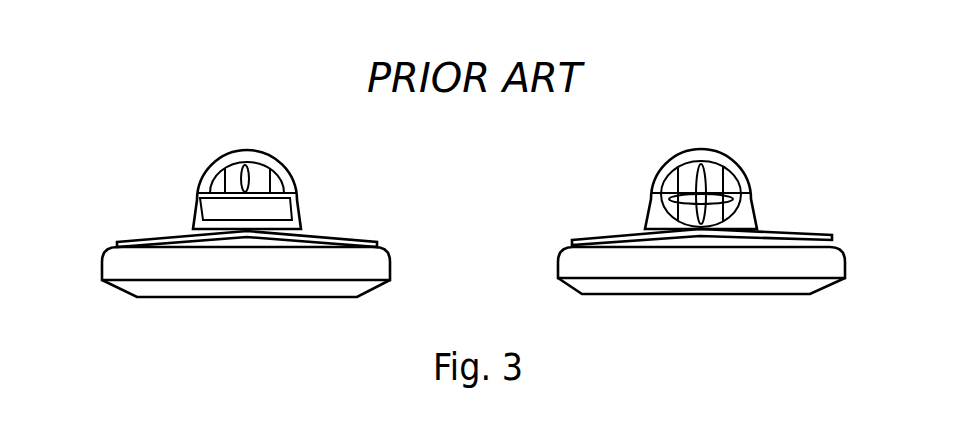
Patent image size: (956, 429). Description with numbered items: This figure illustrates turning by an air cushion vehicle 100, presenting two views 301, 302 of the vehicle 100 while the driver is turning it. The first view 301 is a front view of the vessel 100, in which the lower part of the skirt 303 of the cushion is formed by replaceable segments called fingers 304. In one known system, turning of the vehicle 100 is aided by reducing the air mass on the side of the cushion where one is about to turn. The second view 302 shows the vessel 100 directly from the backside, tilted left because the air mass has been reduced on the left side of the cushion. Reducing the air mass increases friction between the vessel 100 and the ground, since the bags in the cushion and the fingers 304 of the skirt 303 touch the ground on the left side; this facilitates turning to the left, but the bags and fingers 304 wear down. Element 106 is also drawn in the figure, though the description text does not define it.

The air cushion vehicle 100 is at (246, 149).
The deck plate 106 is at (578, 267).
The first view 301 is at (120, 172).
The second view 302 is at (573, 170).
The skirt 303 is at (158, 265).
The fingers 304 is at (328, 297).